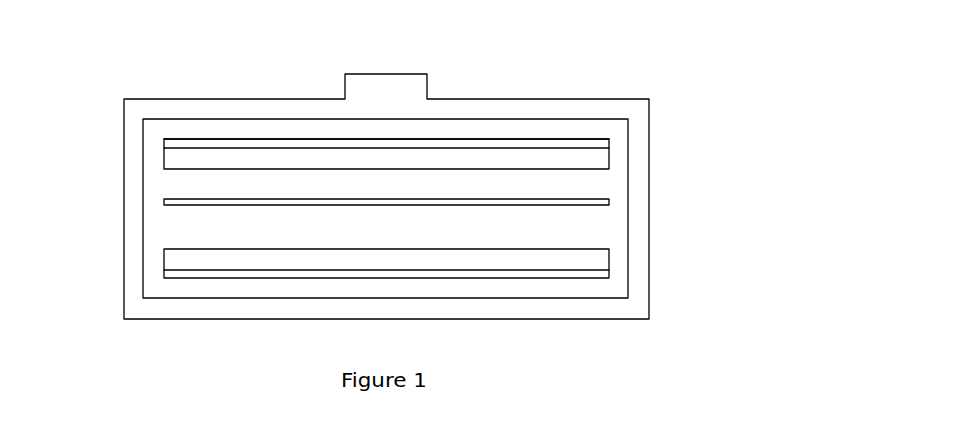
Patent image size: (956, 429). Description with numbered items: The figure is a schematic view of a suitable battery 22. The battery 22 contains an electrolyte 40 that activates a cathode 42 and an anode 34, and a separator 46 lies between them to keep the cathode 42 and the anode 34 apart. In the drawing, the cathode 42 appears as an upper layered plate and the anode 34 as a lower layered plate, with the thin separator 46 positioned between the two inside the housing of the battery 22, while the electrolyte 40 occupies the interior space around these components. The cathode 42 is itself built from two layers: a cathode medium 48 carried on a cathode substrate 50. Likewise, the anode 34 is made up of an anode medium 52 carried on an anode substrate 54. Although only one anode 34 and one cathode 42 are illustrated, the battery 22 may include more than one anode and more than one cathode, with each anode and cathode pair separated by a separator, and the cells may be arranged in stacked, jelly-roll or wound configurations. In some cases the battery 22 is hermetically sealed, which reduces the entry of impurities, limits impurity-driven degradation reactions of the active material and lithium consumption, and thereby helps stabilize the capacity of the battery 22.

The battery 22 is at (255, 78).
The anode 34 is at (487, 292).
The electrolyte 40 is at (254, 228).
The cathode 42 is at (523, 131).
The separator 46 is at (507, 205).
The cathode medium 48 is at (609, 155).
The cathode substrate 50 is at (164, 138).
The anode medium 52 is at (610, 250).
The anode substrate 54 is at (609, 278).